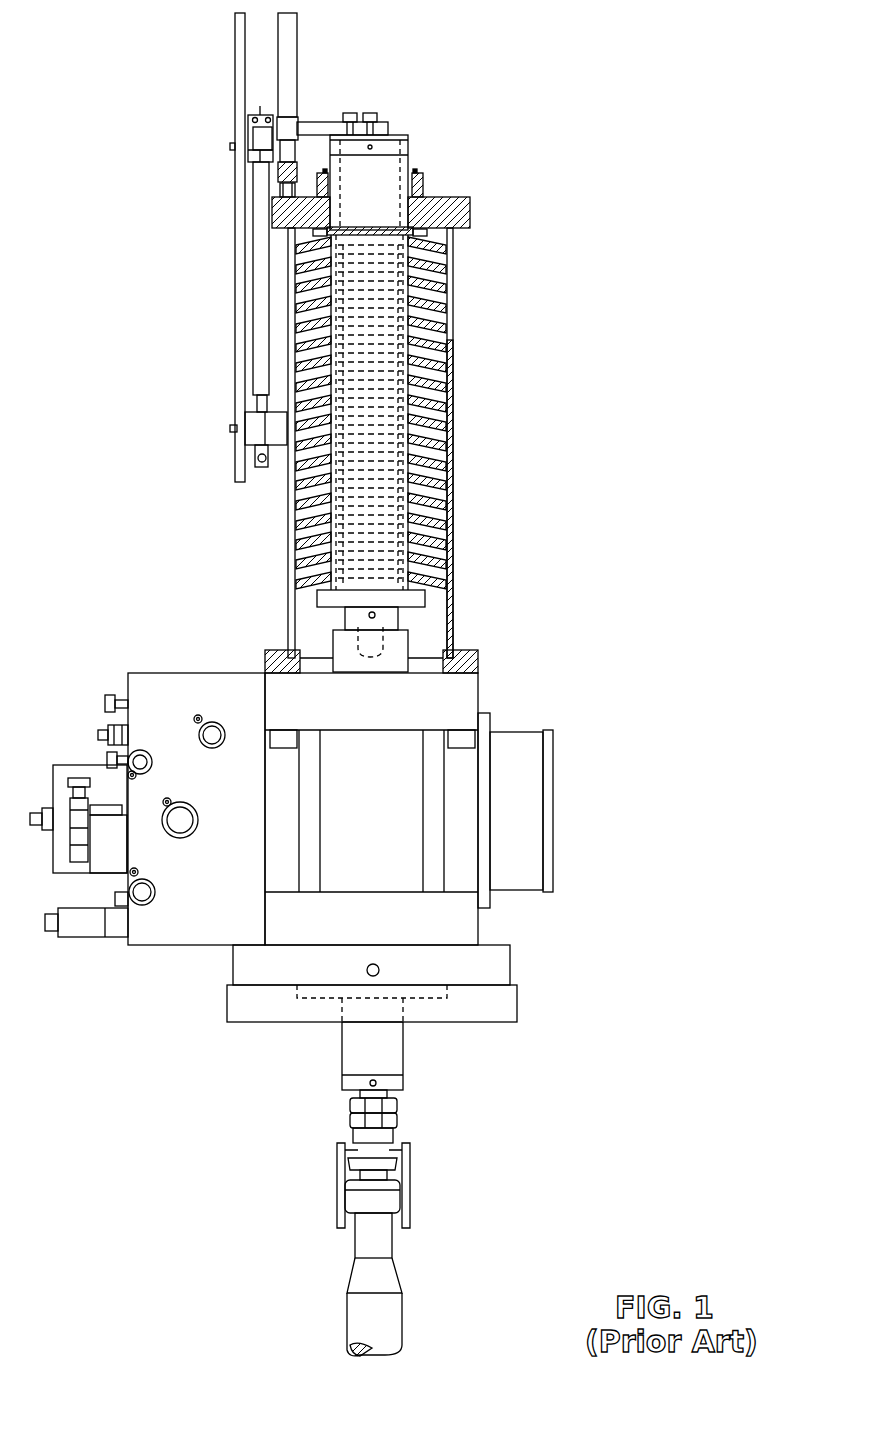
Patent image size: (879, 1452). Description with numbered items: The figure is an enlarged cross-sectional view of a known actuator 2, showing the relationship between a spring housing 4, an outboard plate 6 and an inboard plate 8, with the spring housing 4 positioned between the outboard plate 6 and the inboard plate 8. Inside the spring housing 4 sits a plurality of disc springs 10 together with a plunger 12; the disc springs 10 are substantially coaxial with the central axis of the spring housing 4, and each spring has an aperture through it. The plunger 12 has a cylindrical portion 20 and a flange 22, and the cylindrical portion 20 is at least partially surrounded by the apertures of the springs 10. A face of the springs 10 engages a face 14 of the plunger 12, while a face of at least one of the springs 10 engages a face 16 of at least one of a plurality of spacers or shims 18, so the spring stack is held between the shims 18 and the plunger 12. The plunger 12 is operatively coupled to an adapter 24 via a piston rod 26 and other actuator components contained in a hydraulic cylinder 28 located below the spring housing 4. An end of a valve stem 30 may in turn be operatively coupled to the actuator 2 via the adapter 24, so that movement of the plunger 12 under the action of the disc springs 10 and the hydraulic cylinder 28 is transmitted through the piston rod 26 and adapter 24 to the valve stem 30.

The actuator 2 is at (397, 113).
The spring housing 4 is at (452, 378).
The outboard plate 6 is at (462, 213).
The inboard plate 8 is at (476, 661).
The disc springs 10 is at (302, 558).
The plunger 12 is at (400, 598).
The face of the plunger 14 is at (347, 579).
The face of the spacer 16 is at (393, 237).
The spacers or shims 18 is at (405, 228).
The cylindrical portion 20 is at (450, 467).
The flange 22 is at (420, 602).
The adapter 24 is at (383, 1172).
The piston rod 26 is at (390, 1055).
The hydraulic cylinder 28 is at (403, 838).
The valve stem 30 is at (392, 1312).